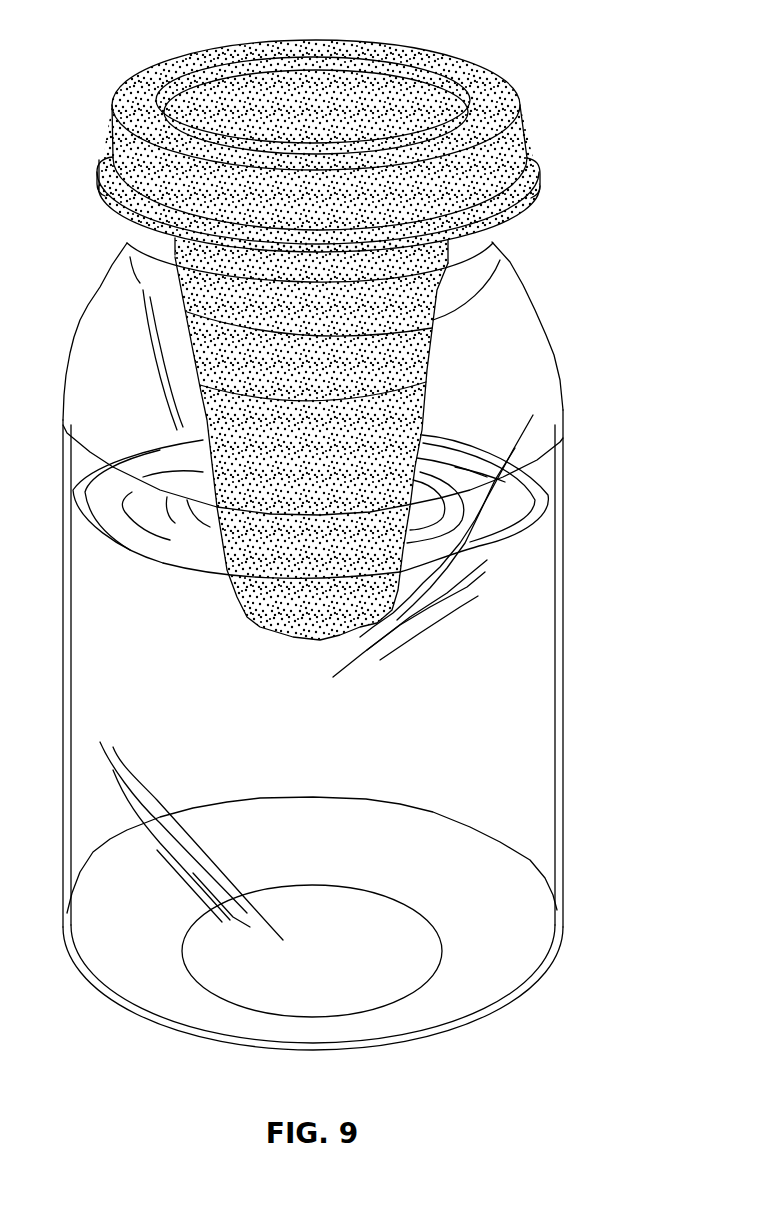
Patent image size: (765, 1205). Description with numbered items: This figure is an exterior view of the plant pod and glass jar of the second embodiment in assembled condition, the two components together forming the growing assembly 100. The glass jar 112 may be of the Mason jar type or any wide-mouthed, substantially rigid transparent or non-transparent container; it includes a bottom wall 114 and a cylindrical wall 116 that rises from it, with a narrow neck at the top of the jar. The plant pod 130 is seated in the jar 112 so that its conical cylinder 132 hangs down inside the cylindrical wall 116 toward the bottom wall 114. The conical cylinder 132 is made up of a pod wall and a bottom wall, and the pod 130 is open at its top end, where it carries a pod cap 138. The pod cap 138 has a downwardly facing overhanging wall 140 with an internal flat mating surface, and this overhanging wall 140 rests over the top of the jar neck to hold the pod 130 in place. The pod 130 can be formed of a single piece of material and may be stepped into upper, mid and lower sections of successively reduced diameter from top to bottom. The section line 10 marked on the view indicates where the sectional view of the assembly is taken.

The section line 10- 10 is at (467, 63).
The growing assembly 100 is at (348, 558).
The glass jar 112 is at (527, 336).
The bottom wall 114 is at (458, 998).
The cylindrical wall 116 is at (543, 671).
The plant pod 130 is at (339, 138).
The conical cylinder 132 is at (423, 385).
The pod cap 138 is at (515, 160).
The overhanging wall 140 is at (97, 160).